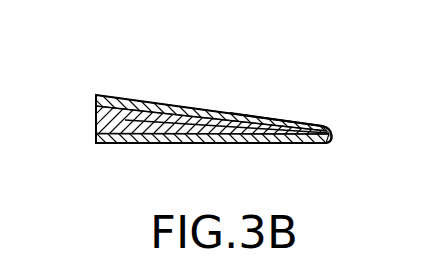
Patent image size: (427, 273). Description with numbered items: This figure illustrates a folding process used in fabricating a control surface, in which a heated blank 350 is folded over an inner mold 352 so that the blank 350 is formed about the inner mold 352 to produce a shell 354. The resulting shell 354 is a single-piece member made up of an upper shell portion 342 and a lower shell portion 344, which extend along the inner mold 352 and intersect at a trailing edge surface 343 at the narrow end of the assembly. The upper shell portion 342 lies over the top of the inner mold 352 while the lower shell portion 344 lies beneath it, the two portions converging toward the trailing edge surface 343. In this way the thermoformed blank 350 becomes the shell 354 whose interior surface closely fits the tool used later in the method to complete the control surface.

The upper shell portion 342 is at (206, 112).
The trailing edge surface 343 is at (334, 133).
The lower shell portion 344 is at (120, 143).
The blank 350 is at (146, 100).
The inner mold 352 is at (99, 120).
The shell 354 is at (268, 117).